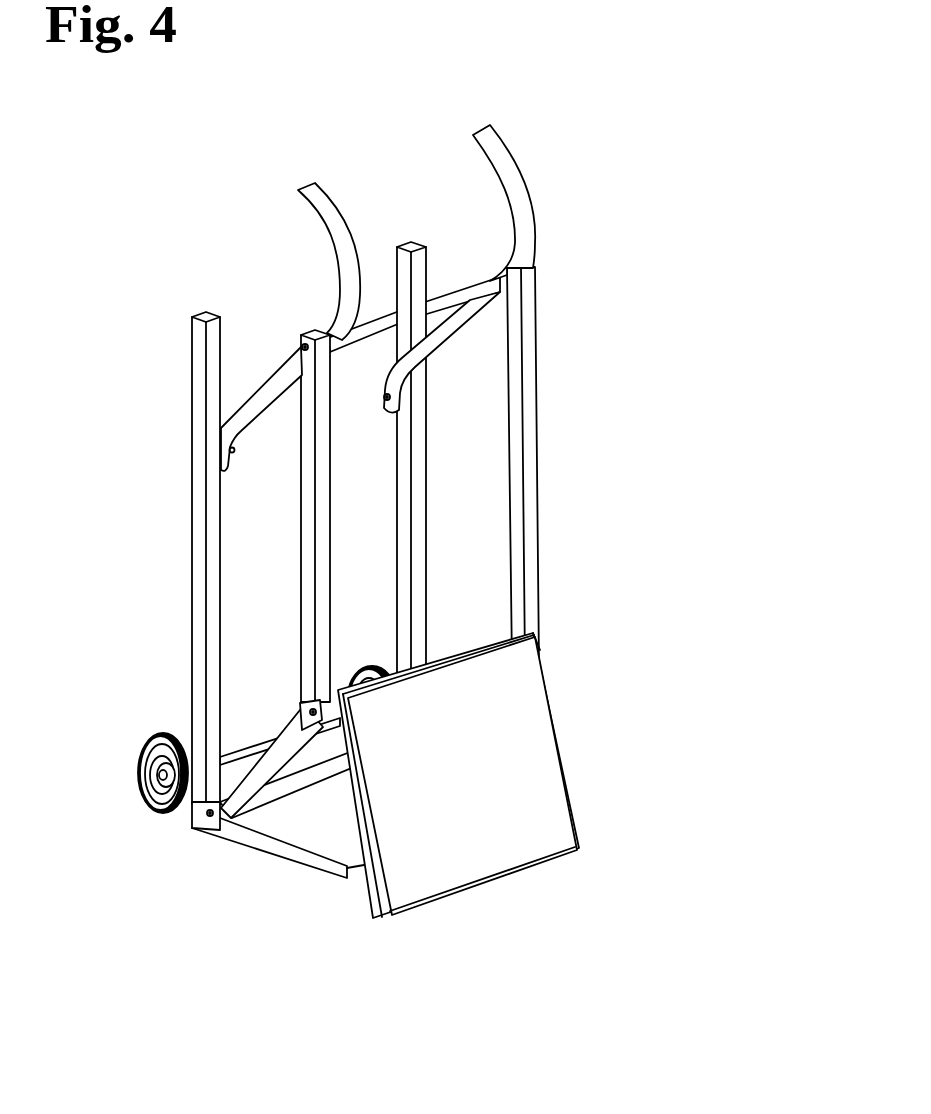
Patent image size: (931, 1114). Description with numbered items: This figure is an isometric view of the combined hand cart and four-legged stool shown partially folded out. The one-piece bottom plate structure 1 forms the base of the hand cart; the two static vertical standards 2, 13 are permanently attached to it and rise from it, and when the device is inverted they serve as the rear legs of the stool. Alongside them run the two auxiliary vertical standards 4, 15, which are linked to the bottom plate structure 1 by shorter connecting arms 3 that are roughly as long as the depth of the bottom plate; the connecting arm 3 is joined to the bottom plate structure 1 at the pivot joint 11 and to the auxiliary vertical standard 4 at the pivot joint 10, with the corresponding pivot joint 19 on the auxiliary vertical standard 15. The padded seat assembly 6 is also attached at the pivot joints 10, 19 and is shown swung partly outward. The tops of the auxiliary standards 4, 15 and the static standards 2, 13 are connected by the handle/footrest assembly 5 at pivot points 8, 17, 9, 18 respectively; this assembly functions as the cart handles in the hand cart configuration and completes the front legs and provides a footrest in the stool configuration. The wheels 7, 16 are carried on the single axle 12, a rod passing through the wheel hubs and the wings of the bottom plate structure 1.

The bottom plate structure 1 is at (320, 825).
The static vertical standard 2 is at (214, 548).
The shorter connecting arm 3 is at (290, 738).
The auxiliary vertical standard 4 is at (328, 539).
The handle/footrest assembly 5 is at (517, 190).
The padded seat assembly 6 is at (492, 757).
The wheel 7 is at (140, 751).
The pivot point 8 is at (302, 346).
The pivot point 9 is at (194, 460).
The pivot joint 10 is at (308, 699).
The pivot joint 11 is at (207, 814).
The axle 12 is at (235, 748).
The static vertical standard 13 is at (418, 487).
The auxiliary vertical standard 15 is at (528, 351).
The wheel 16 is at (355, 678).
The pivot point 17 is at (525, 273).
The pivot point 18 is at (384, 397).
The pivot joint 19 is at (536, 636).